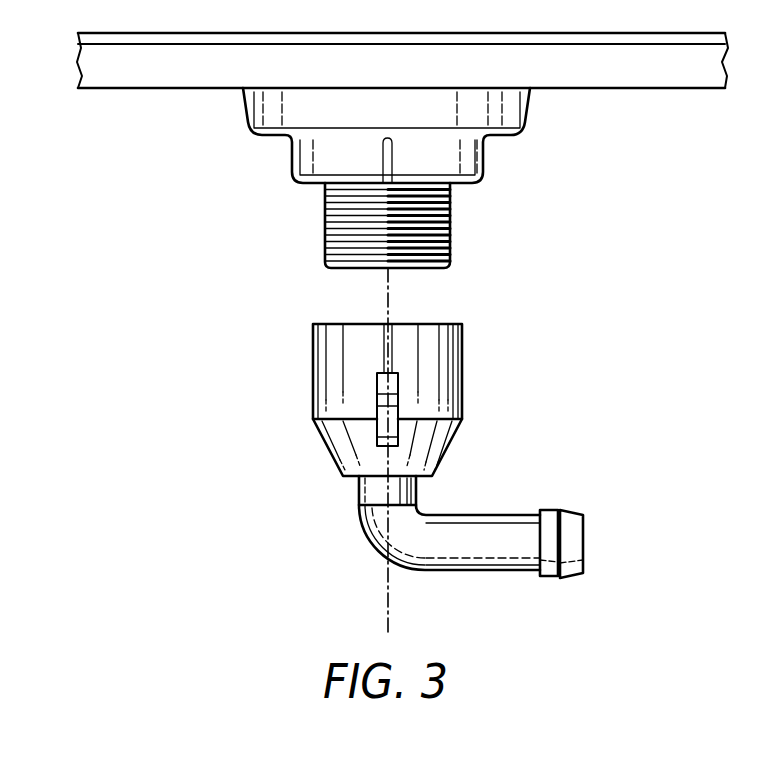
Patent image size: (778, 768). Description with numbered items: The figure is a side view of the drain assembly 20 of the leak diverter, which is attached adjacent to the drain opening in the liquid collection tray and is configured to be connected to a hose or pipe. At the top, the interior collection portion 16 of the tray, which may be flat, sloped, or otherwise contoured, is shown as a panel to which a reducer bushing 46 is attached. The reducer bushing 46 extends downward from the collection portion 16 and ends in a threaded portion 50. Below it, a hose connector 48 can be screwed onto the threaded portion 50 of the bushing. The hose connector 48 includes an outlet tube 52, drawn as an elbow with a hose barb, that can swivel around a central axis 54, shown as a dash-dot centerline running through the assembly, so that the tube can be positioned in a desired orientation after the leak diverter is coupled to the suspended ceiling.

The interior collection portion 16 is at (649, 75).
The drain assembly 20 is at (118, 369).
The reducer bushing 46 is at (505, 119).
The hose connector 48 is at (322, 377).
The threaded portion 50 is at (450, 232).
The outlet tube 52 is at (483, 573).
The central axis 54 is at (387, 595).